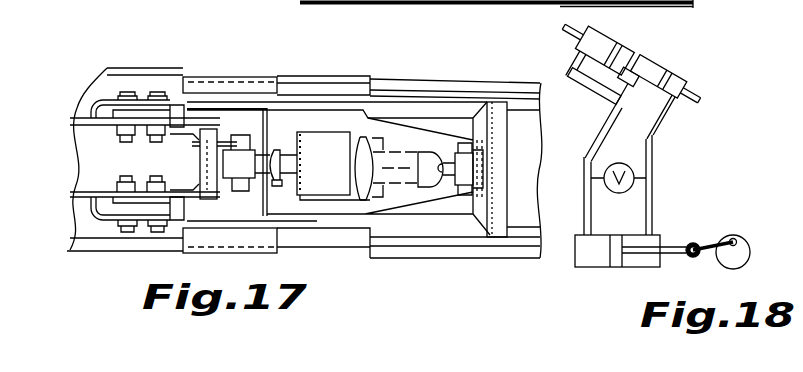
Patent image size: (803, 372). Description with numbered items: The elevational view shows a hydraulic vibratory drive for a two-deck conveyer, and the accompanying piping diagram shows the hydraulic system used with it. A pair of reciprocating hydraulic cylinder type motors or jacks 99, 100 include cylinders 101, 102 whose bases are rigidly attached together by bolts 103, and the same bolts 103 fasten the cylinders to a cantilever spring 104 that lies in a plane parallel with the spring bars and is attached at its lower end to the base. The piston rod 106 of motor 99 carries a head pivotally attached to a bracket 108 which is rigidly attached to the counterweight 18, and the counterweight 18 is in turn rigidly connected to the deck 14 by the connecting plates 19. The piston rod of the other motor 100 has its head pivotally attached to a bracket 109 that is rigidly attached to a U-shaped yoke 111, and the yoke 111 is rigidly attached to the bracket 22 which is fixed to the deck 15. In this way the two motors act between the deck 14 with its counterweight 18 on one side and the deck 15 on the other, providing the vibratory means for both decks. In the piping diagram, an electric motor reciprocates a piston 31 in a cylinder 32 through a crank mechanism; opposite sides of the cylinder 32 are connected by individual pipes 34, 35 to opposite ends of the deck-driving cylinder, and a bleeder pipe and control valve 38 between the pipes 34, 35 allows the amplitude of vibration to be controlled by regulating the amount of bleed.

In FIG. 17, the deck or trough 14 is at (455, 83).
In FIG. 17, the deck or trough 15 is at (173, 92).
In FIG. 17, the counterweight 18 is at (102, 140).
In FIG. 17, the connecting plates 19 is at (190, 105).
In FIG. 17, the bracket 22 is at (262, 92).
In FIG. 17, the bolts 103 is at (383, 143).
In FIG. 17, the cantilever spring 104 is at (310, 163).
In FIG. 17, the piston rod 106 is at (262, 176).
In FIG. 17, the bracket 108 is at (223, 141).
In FIG. 17, the bracket 109 is at (460, 190).
In FIG. 17, the U-shaped yoke 111 is at (497, 200).
In FIG. 18, the piston 31 is at (615, 268).
In FIG. 18, the cylinder 32 is at (577, 268).
In FIG. 18, the pipe 34 is at (604, 130).
In FIG. 18, the pipe 35 is at (652, 212).
In FIG. 18, the bleeder pipe and control valve 38 is at (622, 183).
In FIG. 18, the hydraulic cylinder type motor or jack 99 is at (640, 40).
In FIG. 18, the hydraulic cylinder type motor or jack 100 is at (673, 59).
In FIG. 18, the cylinder 101 is at (580, 48).
In FIG. 18, the cylinder 102 is at (689, 80).